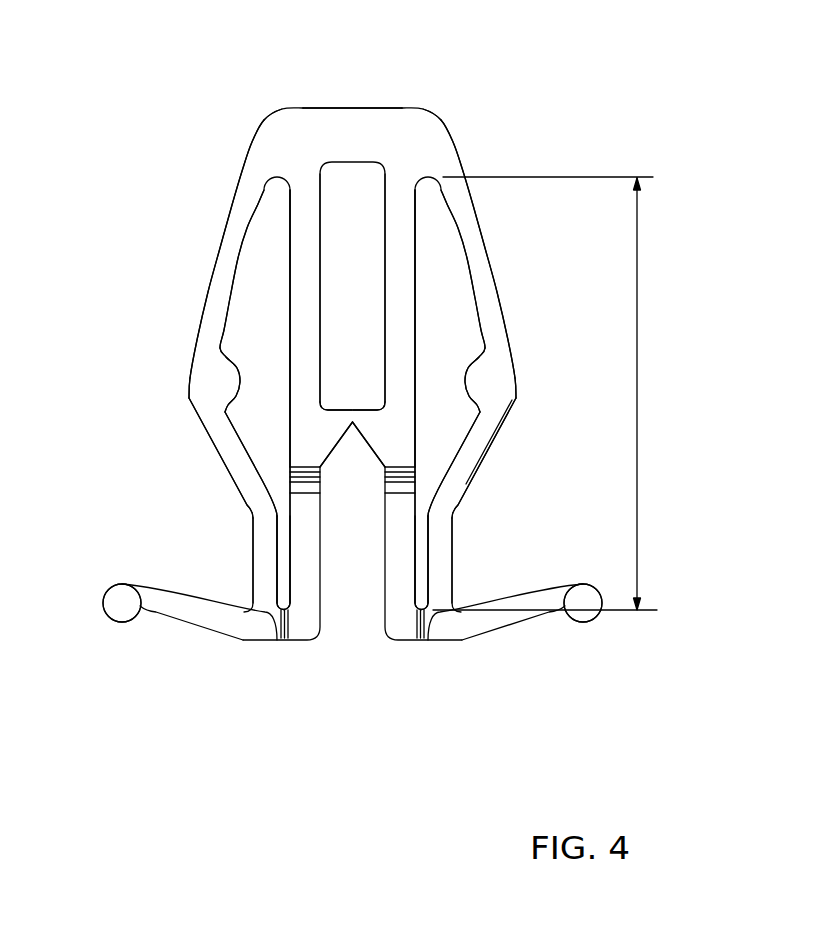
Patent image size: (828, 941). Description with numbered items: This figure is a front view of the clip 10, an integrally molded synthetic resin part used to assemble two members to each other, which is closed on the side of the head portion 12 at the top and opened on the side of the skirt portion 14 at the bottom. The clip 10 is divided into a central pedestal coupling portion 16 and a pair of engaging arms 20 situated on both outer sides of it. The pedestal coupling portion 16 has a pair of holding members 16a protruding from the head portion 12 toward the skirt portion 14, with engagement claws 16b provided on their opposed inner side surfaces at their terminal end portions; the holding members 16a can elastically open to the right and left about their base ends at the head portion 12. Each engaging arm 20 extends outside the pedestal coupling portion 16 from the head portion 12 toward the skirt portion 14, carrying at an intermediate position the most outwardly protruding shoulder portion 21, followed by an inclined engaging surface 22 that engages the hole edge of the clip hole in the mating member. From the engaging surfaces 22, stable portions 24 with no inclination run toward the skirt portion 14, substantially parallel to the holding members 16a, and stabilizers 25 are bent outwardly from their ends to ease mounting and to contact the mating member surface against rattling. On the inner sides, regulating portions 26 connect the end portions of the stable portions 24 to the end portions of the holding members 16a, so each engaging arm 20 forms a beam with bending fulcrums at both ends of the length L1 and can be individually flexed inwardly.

The clip 10 is at (218, 145).
The head portion 12 is at (350, 108).
The skirt portion 14 is at (356, 633).
The pedestal coupling portion 16 is at (282, 284).
The holding members 16a is at (302, 303).
The engagement claws 16b is at (337, 415).
The engaging arms 20 is at (225, 220).
The shoulder portions 21 is at (188, 382).
The engaging surfaces 22 is at (220, 457).
The stable portions 24 is at (253, 567).
The stabilizers 25 is at (185, 612).
The regulating portions 26 is at (303, 518).
The length L1 is at (552, 393).